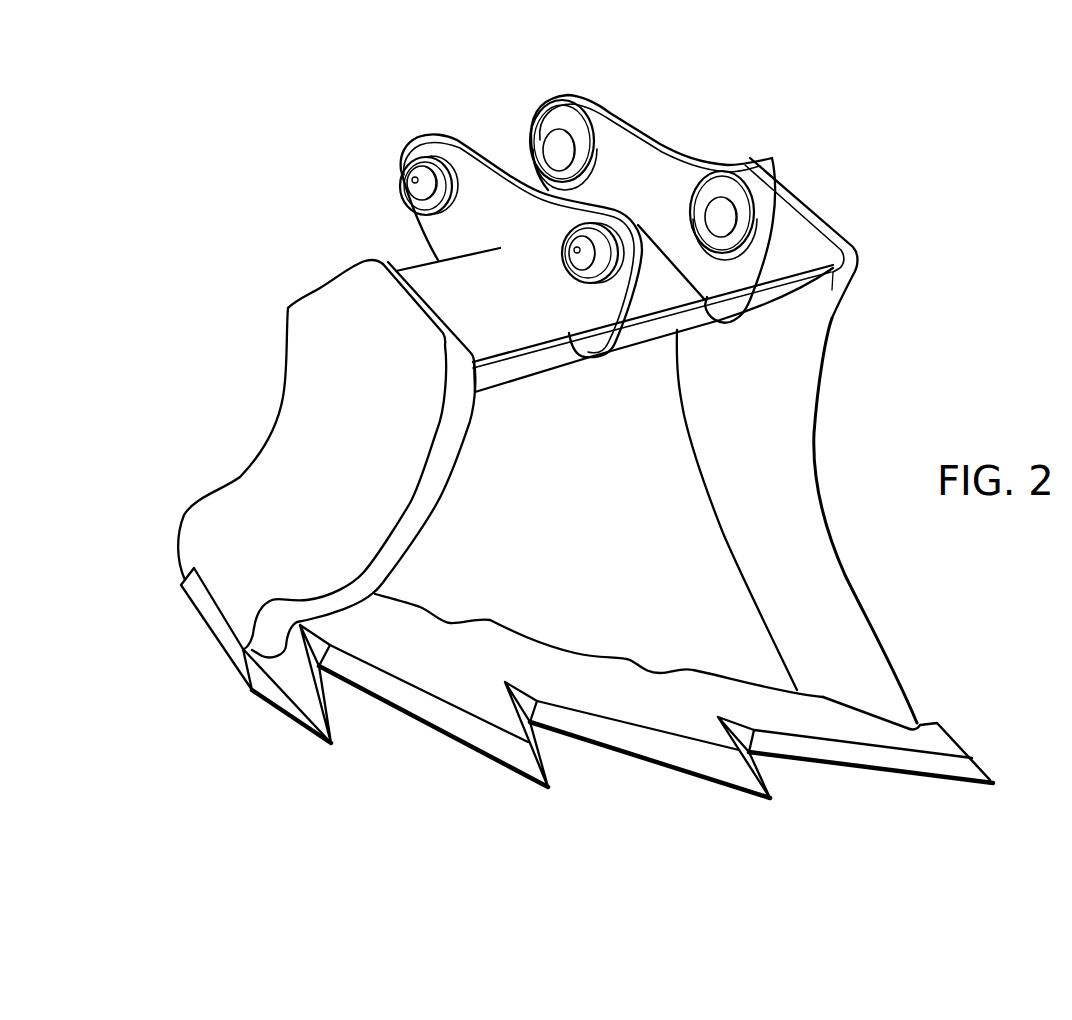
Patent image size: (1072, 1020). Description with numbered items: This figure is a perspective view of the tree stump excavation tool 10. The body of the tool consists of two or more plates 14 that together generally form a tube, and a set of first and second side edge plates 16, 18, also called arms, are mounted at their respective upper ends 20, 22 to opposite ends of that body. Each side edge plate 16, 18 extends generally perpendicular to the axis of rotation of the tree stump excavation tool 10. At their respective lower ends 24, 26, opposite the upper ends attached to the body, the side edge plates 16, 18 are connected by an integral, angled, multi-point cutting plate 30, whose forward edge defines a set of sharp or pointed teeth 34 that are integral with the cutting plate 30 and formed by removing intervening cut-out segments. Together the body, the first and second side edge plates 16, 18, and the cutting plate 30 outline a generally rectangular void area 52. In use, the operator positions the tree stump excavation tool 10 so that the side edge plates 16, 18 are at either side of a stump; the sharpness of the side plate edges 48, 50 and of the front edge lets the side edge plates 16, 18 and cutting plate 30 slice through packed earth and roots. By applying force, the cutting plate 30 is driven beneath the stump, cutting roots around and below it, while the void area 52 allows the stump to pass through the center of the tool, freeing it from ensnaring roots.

The tree stump excavation tool 10 is at (531, 465).
The plates 14 is at (440, 288).
The first side edge plate 16 is at (353, 458).
The second side edge plate 18 is at (844, 497).
The upper end 20 is at (323, 320).
The upper end 22 is at (828, 290).
The lower end 24 is at (233, 583).
The lower end 26 is at (878, 707).
The cutting plate 30 is at (616, 730).
The teeth 34 is at (295, 705).
The side plate edge 48 is at (435, 505).
The side plate edge 50 is at (818, 478).
The void area 52 is at (599, 513).